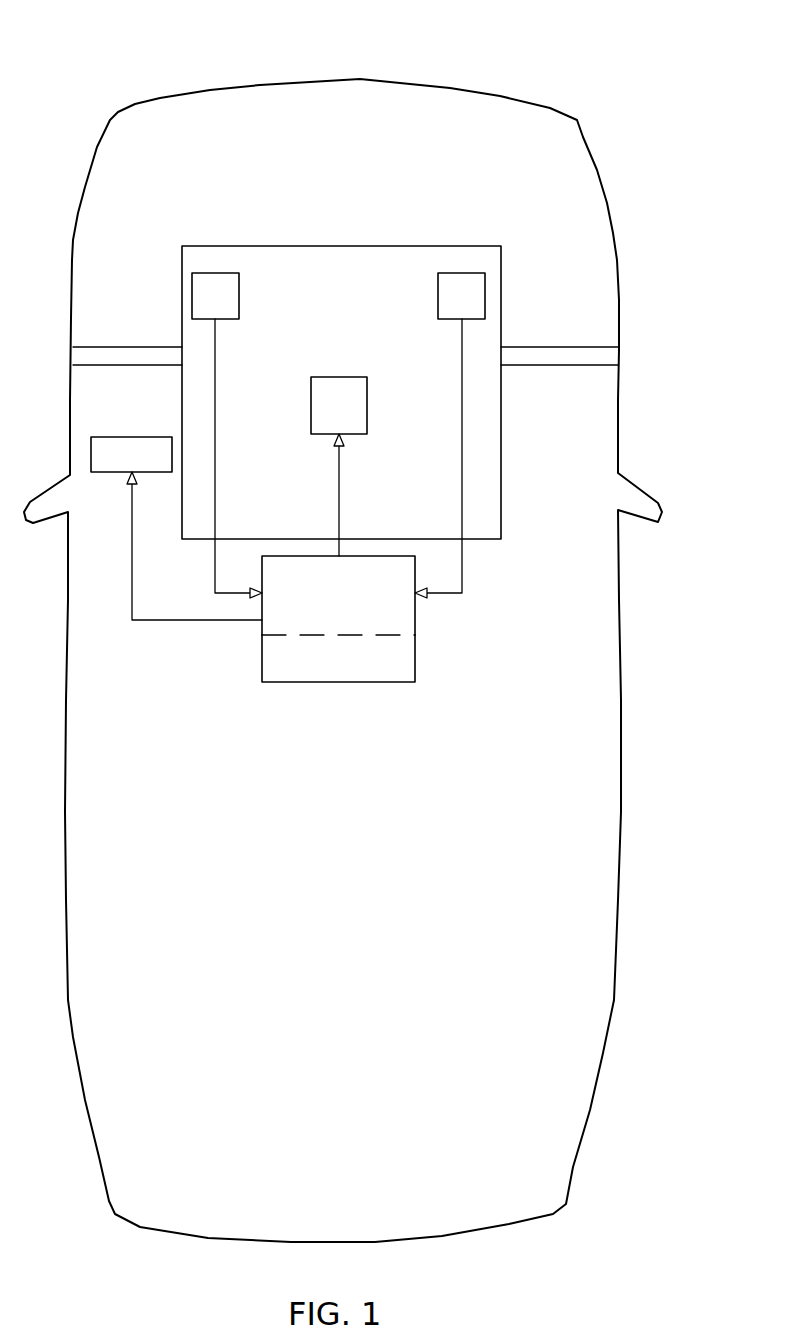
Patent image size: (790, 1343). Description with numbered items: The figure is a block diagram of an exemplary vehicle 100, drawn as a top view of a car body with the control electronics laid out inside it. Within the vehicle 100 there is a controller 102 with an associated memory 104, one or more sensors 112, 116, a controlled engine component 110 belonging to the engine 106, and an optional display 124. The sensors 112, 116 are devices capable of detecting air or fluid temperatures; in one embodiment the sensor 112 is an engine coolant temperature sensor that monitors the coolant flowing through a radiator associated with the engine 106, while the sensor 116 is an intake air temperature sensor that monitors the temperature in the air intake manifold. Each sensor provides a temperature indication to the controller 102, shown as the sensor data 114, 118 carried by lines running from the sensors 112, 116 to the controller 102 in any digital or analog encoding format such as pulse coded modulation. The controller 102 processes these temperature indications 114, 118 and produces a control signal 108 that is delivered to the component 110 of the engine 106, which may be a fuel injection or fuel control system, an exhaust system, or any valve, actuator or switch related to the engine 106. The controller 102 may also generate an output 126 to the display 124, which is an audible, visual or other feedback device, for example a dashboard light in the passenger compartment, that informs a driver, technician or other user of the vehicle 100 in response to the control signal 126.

The vehicle 100 is at (578, 70).
The controller 102 is at (415, 617).
The memory 104 is at (415, 668).
The engine 106 is at (475, 527).
The control signal 108 is at (339, 477).
The controlled engine component 110 is at (367, 409).
The sensor 112 is at (239, 283).
The sensor data 114 is at (215, 440).
The sensor 116 is at (485, 285).
The sensor data 118 is at (462, 440).
The display 124 is at (153, 467).
The output 126 is at (208, 622).